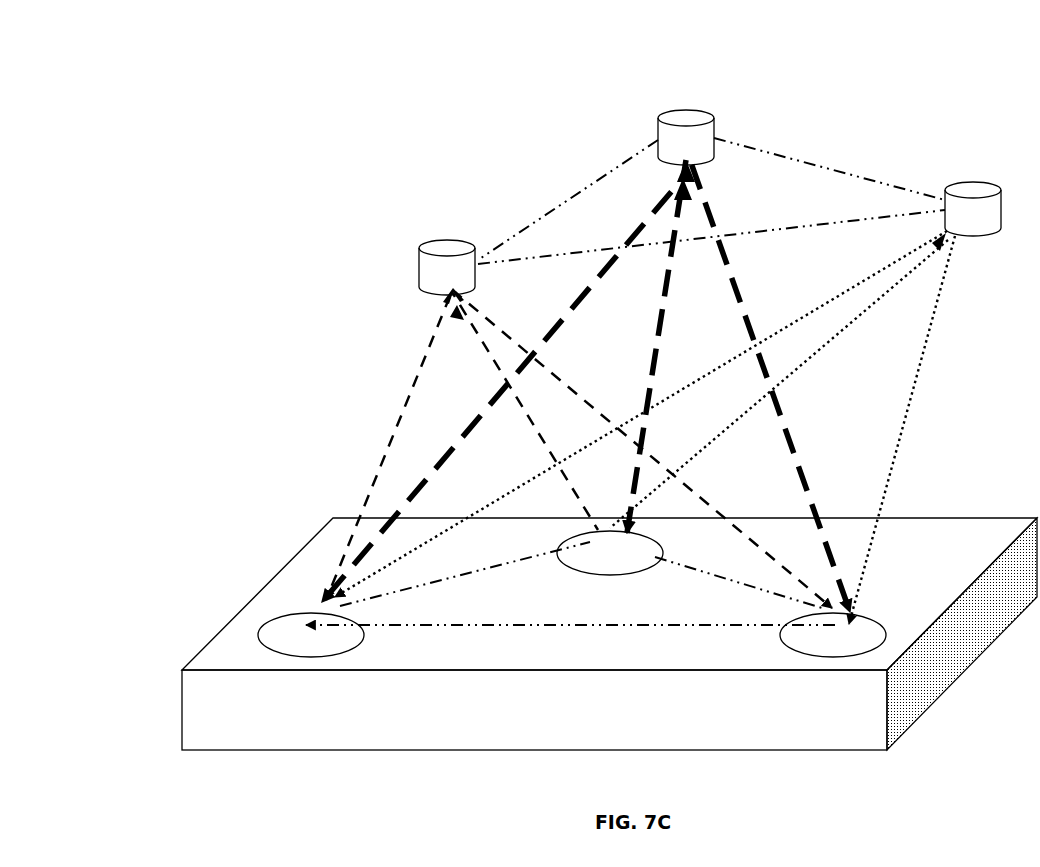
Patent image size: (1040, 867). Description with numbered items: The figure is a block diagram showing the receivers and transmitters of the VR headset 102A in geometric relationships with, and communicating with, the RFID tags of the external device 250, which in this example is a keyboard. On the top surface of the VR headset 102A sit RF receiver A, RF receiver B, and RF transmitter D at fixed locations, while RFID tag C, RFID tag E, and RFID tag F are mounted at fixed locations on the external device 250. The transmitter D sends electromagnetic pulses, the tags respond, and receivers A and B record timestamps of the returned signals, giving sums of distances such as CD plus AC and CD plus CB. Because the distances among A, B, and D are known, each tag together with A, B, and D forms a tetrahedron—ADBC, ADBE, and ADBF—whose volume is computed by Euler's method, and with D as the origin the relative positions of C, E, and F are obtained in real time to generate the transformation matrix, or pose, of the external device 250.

The external device 250 is at (542, 182).
The VR headset 102A is at (609, 634).
The RF receiver A is at (311, 635).
The RF receiver B is at (833, 636).
The RFID tag C is at (430, 267).
The RF transmitter D is at (610, 553).
The RFID tag E is at (686, 114).
The RFID tag F is at (973, 190).